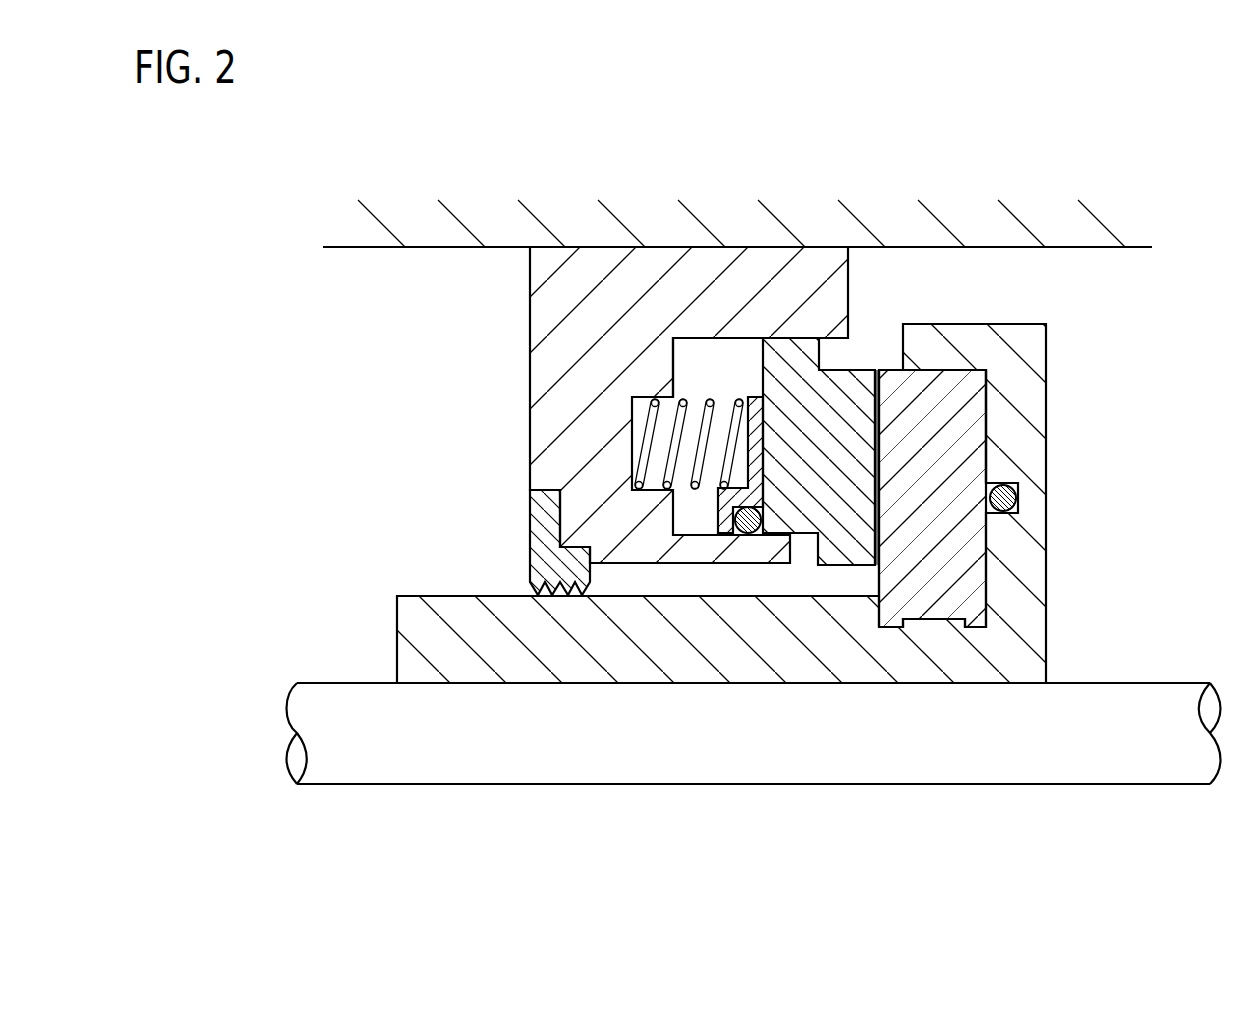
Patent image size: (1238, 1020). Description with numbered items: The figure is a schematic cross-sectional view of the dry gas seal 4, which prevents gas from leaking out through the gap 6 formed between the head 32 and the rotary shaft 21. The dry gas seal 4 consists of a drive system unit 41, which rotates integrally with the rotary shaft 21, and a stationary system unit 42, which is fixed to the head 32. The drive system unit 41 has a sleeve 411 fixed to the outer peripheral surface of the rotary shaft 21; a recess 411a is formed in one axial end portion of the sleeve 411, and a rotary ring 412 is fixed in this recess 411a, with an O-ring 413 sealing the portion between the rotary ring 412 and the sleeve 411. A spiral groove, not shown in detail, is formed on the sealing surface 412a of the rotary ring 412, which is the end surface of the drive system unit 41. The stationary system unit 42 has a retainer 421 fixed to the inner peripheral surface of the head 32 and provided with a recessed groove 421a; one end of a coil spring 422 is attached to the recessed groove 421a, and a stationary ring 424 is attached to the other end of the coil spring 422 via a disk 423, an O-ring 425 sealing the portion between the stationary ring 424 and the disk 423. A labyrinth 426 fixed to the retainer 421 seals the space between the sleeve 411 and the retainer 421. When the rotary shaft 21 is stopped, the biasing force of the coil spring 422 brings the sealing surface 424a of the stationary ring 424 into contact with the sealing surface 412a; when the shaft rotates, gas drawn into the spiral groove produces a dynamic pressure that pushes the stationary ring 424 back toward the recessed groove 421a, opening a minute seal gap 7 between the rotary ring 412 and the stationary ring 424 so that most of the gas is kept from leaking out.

The dry gas seal 4 is at (286, 196).
The gap 6 is at (366, 484).
The seal gap 7 is at (889, 350).
The rotary shaft 21 is at (1137, 683).
The head 32 is at (357, 249).
The drive system unit 41 is at (1128, 599).
The sleeve 411 is at (1060, 463).
The recess 411a is at (988, 395).
The rotary ring 412 is at (877, 542).
The sealing surface 412a is at (866, 585).
The O-ring 413 is at (1018, 505).
The stationary system unit 42 is at (506, 423).
The retainer 421 is at (519, 473).
The recessed groove 421a is at (714, 376).
The coil spring 422 is at (672, 412).
The disk 423 is at (718, 518).
The stationary ring 424 is at (862, 348).
The sealing surface 424a is at (878, 410).
The O-ring 425 is at (746, 522).
The labyrinth 426 is at (528, 544).